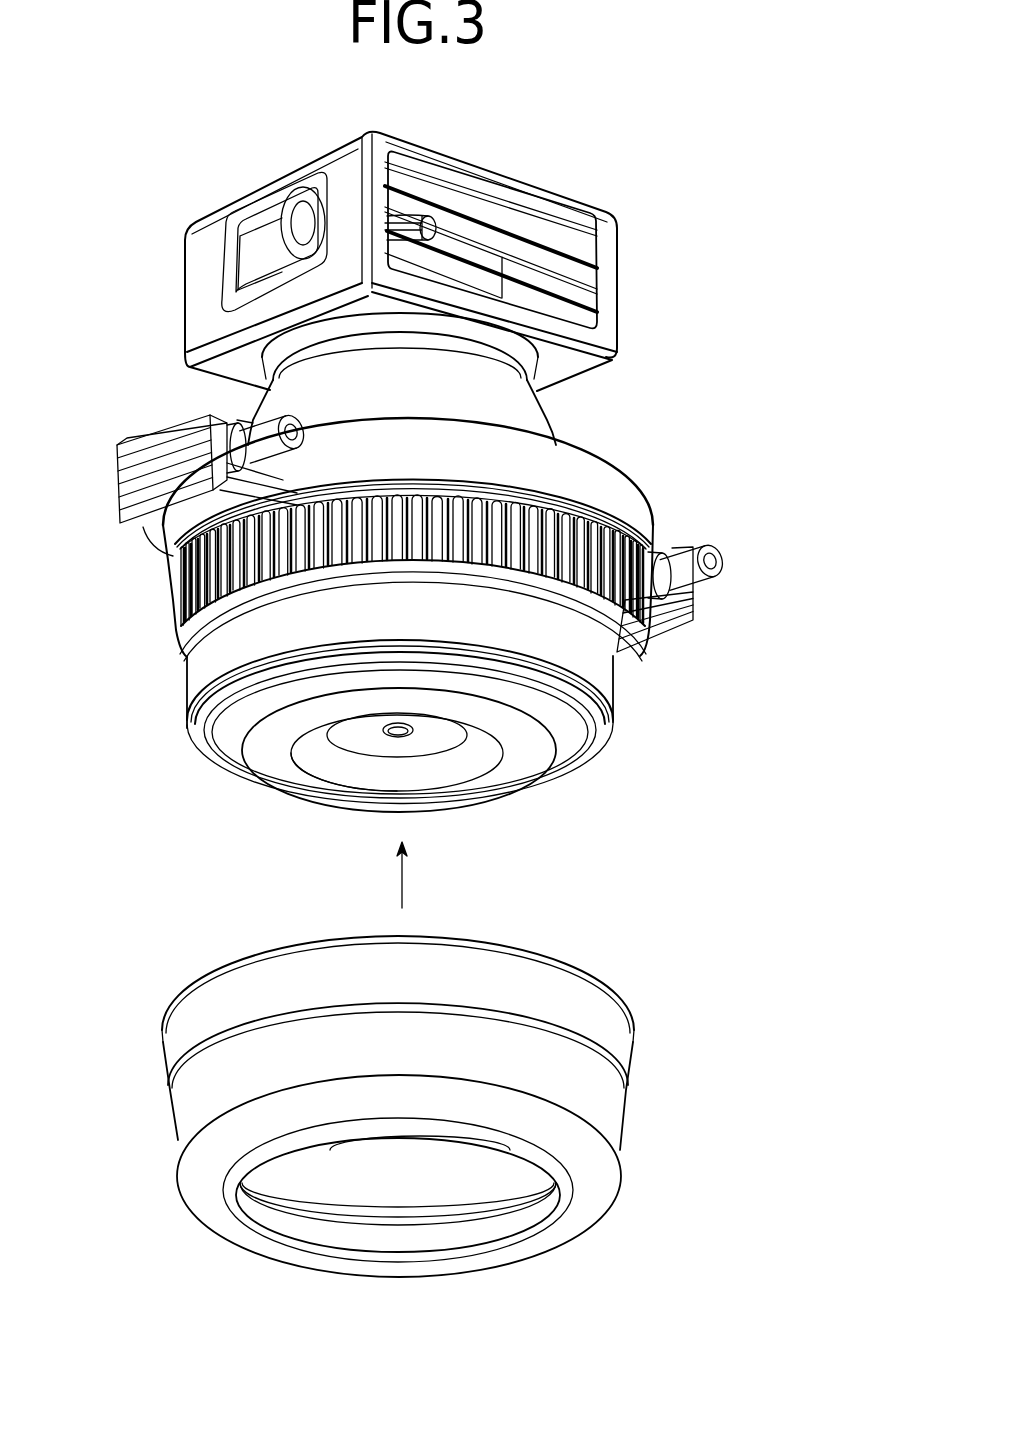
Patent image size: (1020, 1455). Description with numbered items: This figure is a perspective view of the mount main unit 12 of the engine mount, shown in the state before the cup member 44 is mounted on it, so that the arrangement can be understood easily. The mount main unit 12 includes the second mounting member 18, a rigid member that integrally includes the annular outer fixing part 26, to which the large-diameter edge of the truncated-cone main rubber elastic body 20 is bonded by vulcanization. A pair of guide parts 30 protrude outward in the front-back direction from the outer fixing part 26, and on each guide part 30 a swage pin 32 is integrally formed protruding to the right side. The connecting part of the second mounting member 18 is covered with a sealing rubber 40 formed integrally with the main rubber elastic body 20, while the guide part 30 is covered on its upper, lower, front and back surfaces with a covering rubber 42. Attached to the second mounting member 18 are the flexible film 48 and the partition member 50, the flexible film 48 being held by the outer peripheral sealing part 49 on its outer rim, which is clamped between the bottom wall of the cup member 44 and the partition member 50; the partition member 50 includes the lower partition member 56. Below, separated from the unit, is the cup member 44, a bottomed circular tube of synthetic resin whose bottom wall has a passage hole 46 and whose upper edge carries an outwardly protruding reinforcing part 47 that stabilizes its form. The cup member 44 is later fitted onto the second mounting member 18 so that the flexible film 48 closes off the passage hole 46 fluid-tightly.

The mount main unit 12 is at (666, 177).
The second mounting member 18 is at (648, 483).
The main rubber elastic body 20 is at (513, 417).
The outer fixing part 26 is at (637, 523).
The guide part 30 is at (263, 445).
The swage pin 32 is at (237, 440).
The sealing rubber 40 is at (572, 557).
The covering rubber 42 is at (148, 443).
The cup member 44 is at (630, 1129).
The passage hole 46 is at (277, 1157).
The reinforcing part 47 is at (268, 953).
The flexible film 48 is at (482, 807).
The outer peripheral sealing part 49 is at (206, 733).
The partition member 50 is at (620, 695).
The lower partition member 56 is at (200, 668).